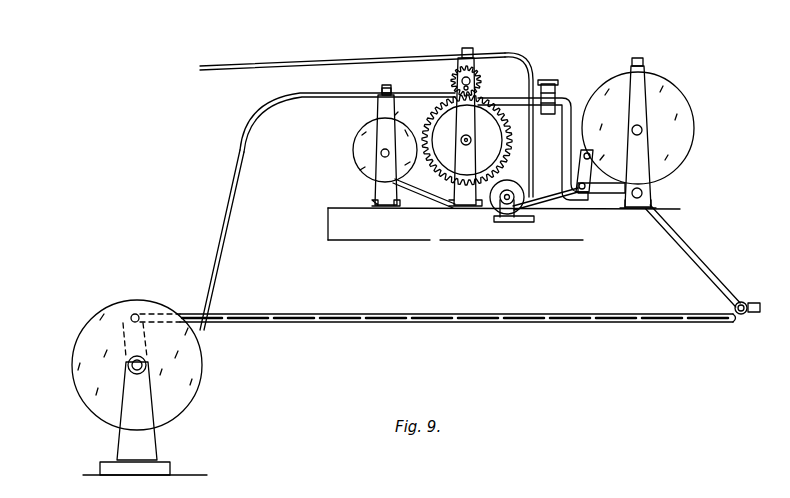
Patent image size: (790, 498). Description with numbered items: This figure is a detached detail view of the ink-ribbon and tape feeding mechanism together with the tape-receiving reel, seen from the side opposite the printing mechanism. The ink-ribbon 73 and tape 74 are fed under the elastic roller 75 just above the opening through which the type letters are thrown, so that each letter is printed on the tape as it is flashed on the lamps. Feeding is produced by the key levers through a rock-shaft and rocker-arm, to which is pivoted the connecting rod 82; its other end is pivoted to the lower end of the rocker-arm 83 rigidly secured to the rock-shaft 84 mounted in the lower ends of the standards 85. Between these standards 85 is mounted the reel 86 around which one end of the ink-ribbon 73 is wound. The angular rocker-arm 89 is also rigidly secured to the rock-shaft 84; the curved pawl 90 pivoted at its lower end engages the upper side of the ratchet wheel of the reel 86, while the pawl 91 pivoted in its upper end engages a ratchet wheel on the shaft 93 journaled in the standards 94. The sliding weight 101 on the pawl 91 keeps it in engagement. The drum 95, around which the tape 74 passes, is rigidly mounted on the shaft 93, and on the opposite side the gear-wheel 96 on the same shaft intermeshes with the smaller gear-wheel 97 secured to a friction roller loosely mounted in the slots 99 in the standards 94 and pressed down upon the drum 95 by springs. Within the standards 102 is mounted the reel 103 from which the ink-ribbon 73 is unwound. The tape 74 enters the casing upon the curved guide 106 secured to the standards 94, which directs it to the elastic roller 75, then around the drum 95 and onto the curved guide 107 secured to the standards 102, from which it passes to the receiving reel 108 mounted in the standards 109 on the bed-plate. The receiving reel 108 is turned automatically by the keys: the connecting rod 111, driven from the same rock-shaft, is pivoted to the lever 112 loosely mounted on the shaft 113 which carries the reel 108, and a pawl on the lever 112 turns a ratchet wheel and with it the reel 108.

The ink-ribbon 73 is at (430, 198).
The tape 74 is at (313, 63).
The elastic roller 75 is at (508, 205).
The connecting rod 82 is at (746, 314).
The rocker-arm 83 is at (700, 260).
The rock-shaft 84 is at (645, 193).
The standards 85 is at (638, 133).
The reel 86 is at (638, 128).
The angular rocker-arm 89 is at (618, 196).
The curved pawl 90 is at (586, 170).
The pawl 91 is at (519, 106).
The shaft 93 is at (468, 88).
The standards 94 is at (465, 132).
The drum 95 is at (459, 140).
The gear-wheel 96 is at (451, 141).
The smaller gear-wheel 97 is at (482, 80).
The slots 99 is at (461, 89).
The sliding weight 101 is at (556, 89).
The standards 102 is at (380, 116).
The reel 103 is at (363, 152).
The curved guide 106 is at (524, 66).
The curved guide 107 is at (302, 99).
The receiving reel 108 is at (137, 365).
The standards 109 is at (145, 418).
The connecting rod 111 is at (485, 323).
The lever 112 is at (122, 334).
The shaft 113 is at (138, 378).